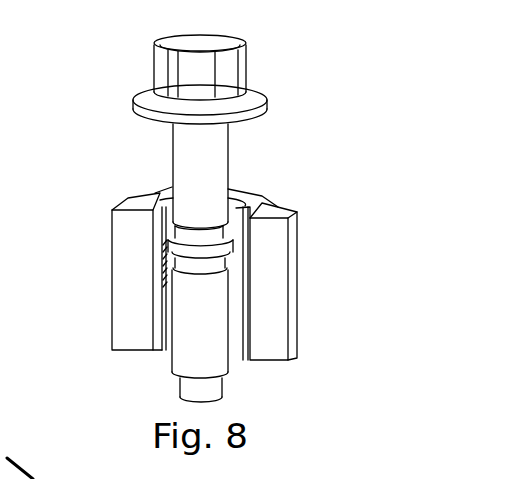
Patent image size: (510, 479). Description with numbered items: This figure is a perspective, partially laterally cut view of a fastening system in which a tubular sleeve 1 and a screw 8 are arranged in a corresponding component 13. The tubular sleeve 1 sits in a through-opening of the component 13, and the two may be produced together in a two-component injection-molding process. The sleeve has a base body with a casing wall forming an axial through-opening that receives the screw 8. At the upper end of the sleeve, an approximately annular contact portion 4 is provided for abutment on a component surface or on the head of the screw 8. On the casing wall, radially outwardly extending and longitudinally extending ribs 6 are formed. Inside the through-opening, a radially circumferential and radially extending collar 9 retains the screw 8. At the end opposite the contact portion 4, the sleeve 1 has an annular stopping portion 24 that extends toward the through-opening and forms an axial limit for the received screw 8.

The tubular sleeve 1 is at (153, 302).
The contact portion 4 is at (270, 194).
The ribs 6 is at (260, 253).
The screw 8 is at (208, 152).
The collar 9 is at (180, 226).
The component 13 is at (273, 323).
The stopping portion 24 is at (240, 350).